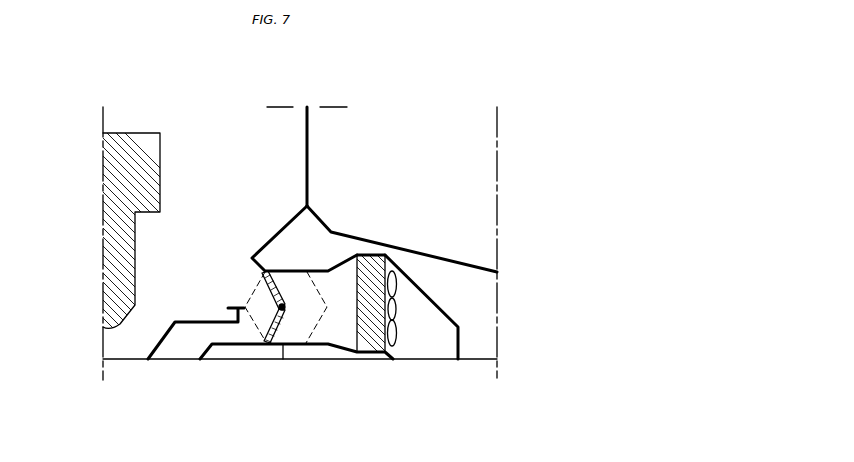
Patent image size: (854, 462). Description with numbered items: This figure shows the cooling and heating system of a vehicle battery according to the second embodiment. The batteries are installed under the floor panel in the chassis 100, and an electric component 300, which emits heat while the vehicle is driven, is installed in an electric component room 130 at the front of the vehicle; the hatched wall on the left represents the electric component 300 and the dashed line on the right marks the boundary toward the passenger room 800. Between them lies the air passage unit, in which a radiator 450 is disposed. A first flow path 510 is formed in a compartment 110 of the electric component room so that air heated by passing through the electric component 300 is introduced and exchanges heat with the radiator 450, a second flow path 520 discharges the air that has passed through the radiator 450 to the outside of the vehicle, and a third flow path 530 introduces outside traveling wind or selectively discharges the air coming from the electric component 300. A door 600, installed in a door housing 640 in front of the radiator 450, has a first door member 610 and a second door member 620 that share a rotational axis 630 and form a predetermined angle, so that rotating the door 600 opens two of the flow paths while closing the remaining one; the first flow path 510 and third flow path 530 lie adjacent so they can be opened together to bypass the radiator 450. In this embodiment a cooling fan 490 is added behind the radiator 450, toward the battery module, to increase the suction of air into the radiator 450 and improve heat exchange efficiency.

The chassis 100 is at (311, 140).
The compartment of the electric component room 110 is at (287, 222).
The electric component room 130 is at (221, 150).
The electric component 300 is at (118, 175).
The radiator 450 is at (372, 348).
The cooling fan 490 is at (390, 270).
The first flow path 510 is at (243, 294).
The second flow path 520 is at (431, 348).
The third flow path 530 is at (182, 350).
The door 600 is at (267, 349).
The first door member 610 is at (283, 347).
The second door member 620 is at (283, 295).
The rotational axis 630 is at (285, 306).
The door housing 640 is at (319, 322).
The passenger room 800 is at (435, 162).